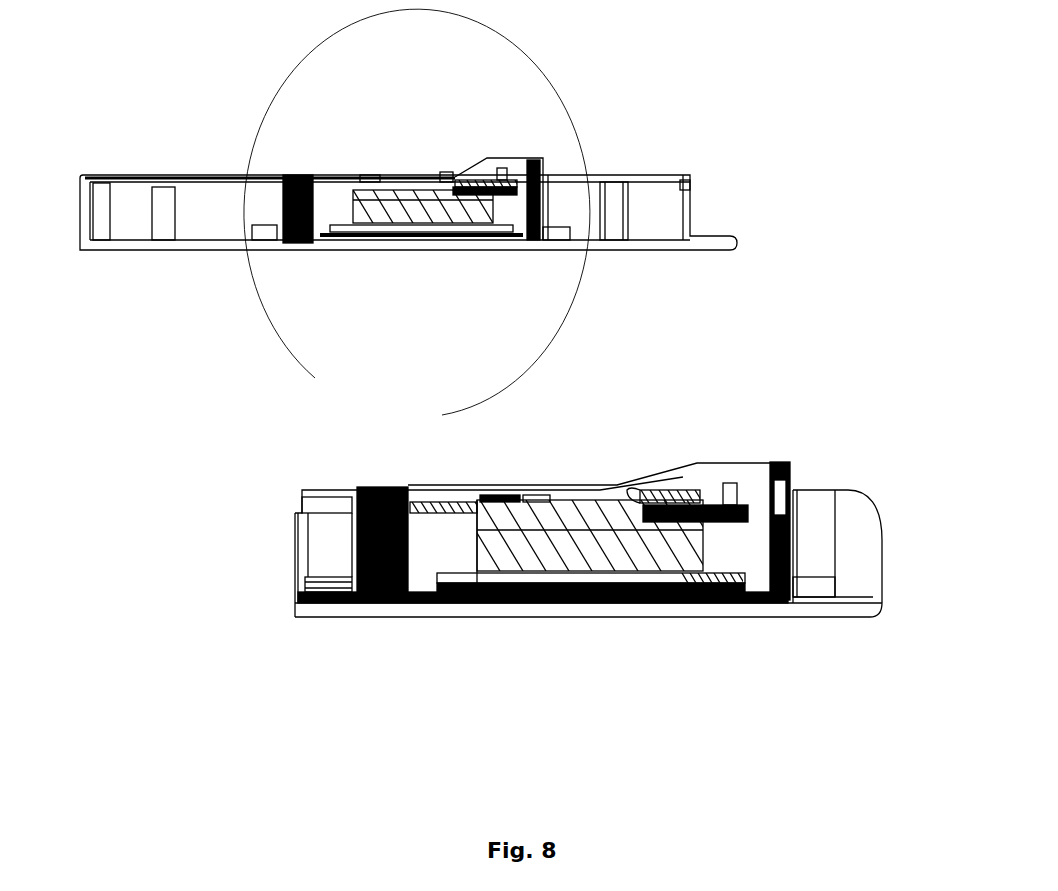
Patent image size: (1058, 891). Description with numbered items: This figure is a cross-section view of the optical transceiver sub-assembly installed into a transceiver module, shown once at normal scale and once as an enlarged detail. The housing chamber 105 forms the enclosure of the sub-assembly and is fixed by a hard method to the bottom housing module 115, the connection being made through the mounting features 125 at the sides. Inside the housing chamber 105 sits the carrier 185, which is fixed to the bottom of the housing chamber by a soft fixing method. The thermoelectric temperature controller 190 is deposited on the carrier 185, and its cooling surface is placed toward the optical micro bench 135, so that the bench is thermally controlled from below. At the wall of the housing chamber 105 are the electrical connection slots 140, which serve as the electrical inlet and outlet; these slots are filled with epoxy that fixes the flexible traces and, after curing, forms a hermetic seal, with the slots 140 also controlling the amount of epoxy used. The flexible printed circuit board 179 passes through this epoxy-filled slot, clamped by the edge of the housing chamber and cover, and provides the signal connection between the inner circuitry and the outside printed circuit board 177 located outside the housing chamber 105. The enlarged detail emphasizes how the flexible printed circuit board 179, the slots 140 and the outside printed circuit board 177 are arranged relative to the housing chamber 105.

The housing chamber 105 is at (585, 605).
The bottom housing module 115 is at (797, 618).
The mounting features 125 is at (305, 573).
The optical micro bench 135 is at (583, 508).
The electrical connection slots 140 is at (343, 174).
The outside printed circuit board 177 is at (113, 178).
The flexible printed circuit board 179 is at (277, 172).
The carrier 185 is at (460, 568).
The thermoelectric temperature controller 190 is at (523, 542).